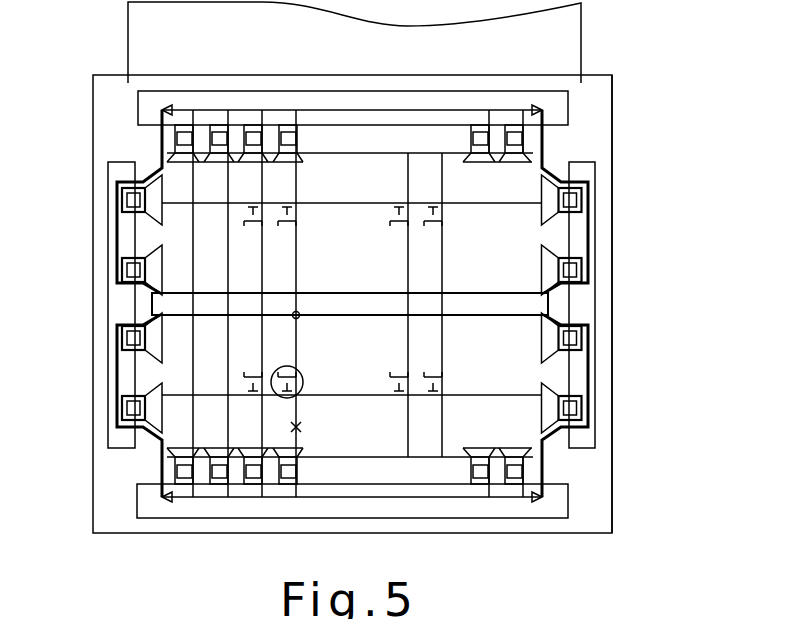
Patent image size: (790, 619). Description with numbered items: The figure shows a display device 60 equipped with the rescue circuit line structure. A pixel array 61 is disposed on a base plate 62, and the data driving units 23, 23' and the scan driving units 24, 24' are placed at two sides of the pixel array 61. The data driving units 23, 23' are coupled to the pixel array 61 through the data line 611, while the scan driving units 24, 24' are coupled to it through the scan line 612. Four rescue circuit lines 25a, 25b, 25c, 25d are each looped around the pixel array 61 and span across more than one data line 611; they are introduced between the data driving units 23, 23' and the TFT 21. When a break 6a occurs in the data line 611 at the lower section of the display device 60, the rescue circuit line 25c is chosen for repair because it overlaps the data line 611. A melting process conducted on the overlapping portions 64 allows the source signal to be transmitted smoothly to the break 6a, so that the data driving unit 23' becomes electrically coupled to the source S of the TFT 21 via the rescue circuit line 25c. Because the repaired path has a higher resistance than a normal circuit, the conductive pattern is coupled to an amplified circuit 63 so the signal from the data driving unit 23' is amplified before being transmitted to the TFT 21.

The display device 60 is at (648, 97).
The base plate 62 is at (612, 277).
The data driving unit 23 is at (353, 82).
The data driving unit 23' is at (352, 527).
The scan driving unit 24 is at (82, 305).
The scan driving unit 24' is at (622, 305).
The rescue circuit line 25a is at (162, 143).
The rescue circuit line 25b is at (542, 138).
The rescue circuit line 25c is at (162, 468).
The rescue circuit line 25d is at (542, 466).
The amplified circuit 63 is at (165, 503).
The overlapping portions 64 is at (297, 311).
The pixel array 61 is at (458, 406).
The data line 611 is at (297, 343).
The scan line 612 is at (318, 393).
The TFT 21 is at (283, 367).
The break 6a is at (302, 428).